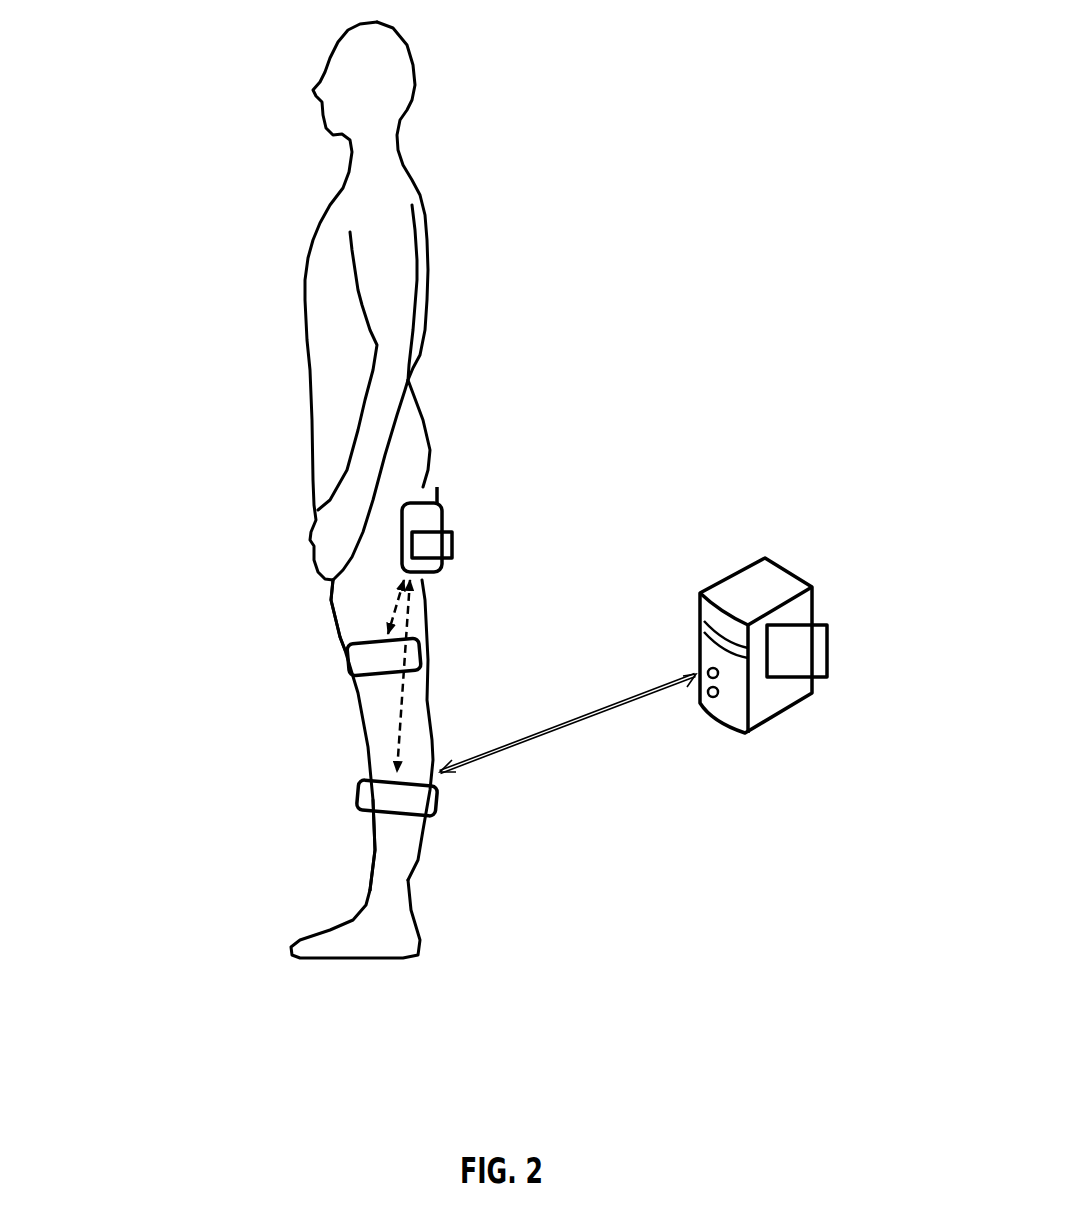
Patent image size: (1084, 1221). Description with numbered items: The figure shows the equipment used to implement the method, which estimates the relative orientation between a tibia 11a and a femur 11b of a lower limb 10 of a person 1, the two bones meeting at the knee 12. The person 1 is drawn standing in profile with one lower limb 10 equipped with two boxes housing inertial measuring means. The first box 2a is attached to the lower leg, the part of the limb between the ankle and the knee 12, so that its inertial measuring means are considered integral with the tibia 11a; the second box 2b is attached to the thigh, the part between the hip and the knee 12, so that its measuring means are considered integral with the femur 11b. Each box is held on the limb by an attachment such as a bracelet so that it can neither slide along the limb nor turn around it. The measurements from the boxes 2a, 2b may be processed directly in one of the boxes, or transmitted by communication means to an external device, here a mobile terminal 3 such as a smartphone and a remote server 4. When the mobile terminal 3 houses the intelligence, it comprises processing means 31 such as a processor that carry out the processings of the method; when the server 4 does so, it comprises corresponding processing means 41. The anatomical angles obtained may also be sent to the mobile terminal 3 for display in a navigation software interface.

The person 1 is at (303, 306).
The lower limb 10 is at (404, 960).
The tibia 11a is at (367, 872).
The femur 11b is at (325, 604).
The knee 12 is at (363, 726).
The first box 2a is at (357, 799).
The second box 2b is at (343, 661).
The mobile terminal 3 is at (447, 512).
The processing means 31 is at (459, 548).
The remote server 4 is at (782, 565).
The processing means 41 is at (832, 657).